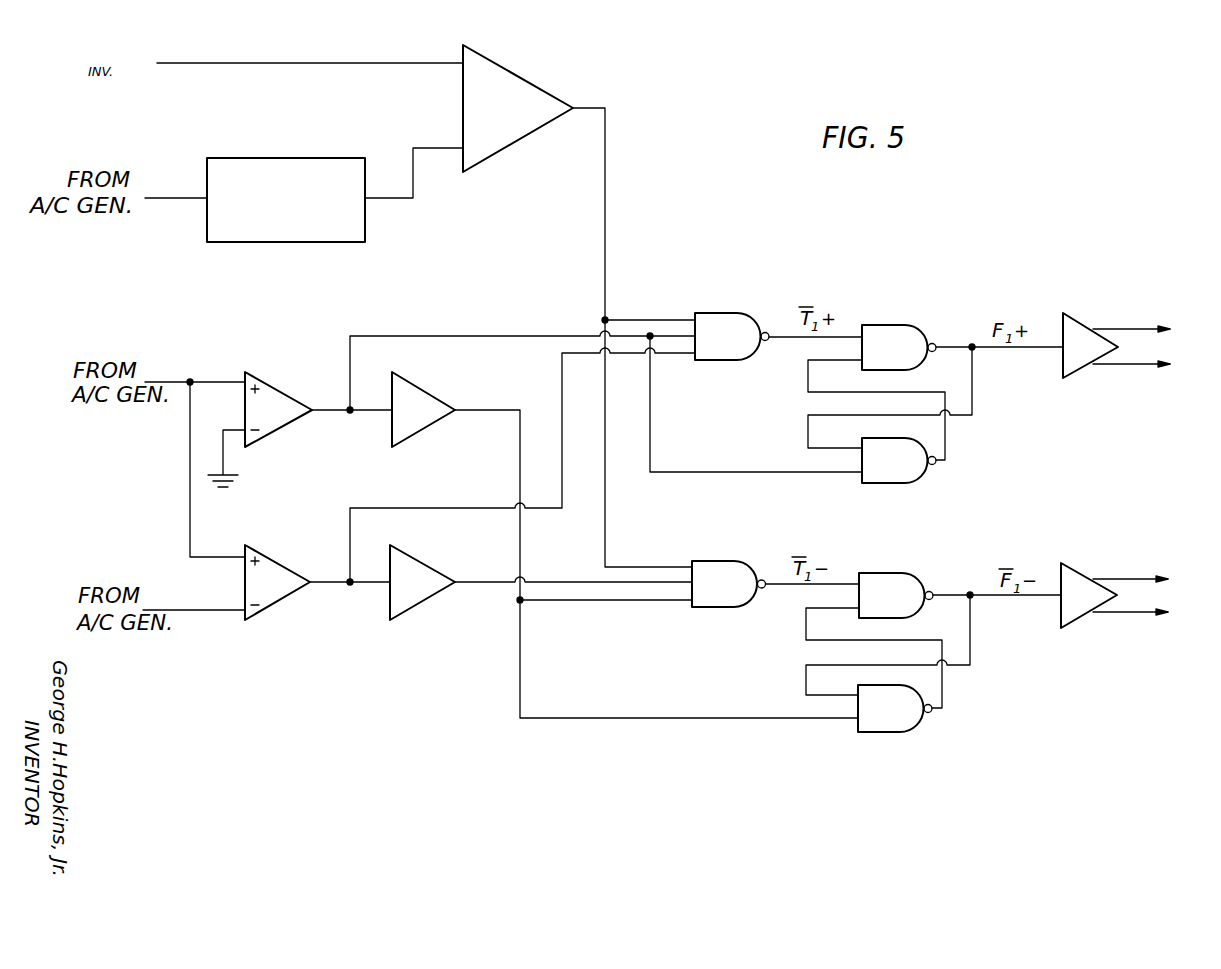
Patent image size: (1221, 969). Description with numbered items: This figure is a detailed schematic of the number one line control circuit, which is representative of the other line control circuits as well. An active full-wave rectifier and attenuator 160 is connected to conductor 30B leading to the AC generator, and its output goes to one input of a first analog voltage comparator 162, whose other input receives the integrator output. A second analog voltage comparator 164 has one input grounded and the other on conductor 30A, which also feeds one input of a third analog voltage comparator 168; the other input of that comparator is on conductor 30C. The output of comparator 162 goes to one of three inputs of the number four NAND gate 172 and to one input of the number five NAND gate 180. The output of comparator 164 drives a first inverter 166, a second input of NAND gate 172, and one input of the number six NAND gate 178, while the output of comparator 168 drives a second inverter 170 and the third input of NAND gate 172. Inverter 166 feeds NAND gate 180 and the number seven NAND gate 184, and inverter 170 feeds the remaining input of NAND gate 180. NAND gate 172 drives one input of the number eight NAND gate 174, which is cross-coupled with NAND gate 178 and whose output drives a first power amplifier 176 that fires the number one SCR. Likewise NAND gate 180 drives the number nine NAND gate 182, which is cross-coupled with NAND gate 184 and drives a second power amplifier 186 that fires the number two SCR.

The conductor 30A is at (170, 380).
The conductor 30B is at (172, 200).
The conductor 30C is at (205, 612).
The rectifier and attenuator 160 is at (290, 158).
The analog voltage comparator 162 is at (530, 82).
The analog voltage comparator 164 is at (276, 384).
The inverter 166 is at (430, 392).
The analog voltage comparator 168 is at (283, 605).
The inverter 170 is at (422, 604).
The No. 4 NAND gate 172 is at (730, 313).
The No. 8 NAND gate 174 is at (885, 325).
The first power amplifier 176 is at (1083, 318).
The No. 6 NAND gate 178 is at (918, 483).
The No. 5 NAND gate 180 is at (724, 561).
The No. 9 NAND gate 182 is at (886, 573).
The No. 7 NAND gate 184 is at (899, 732).
The second power amplifier 186 is at (1080, 568).